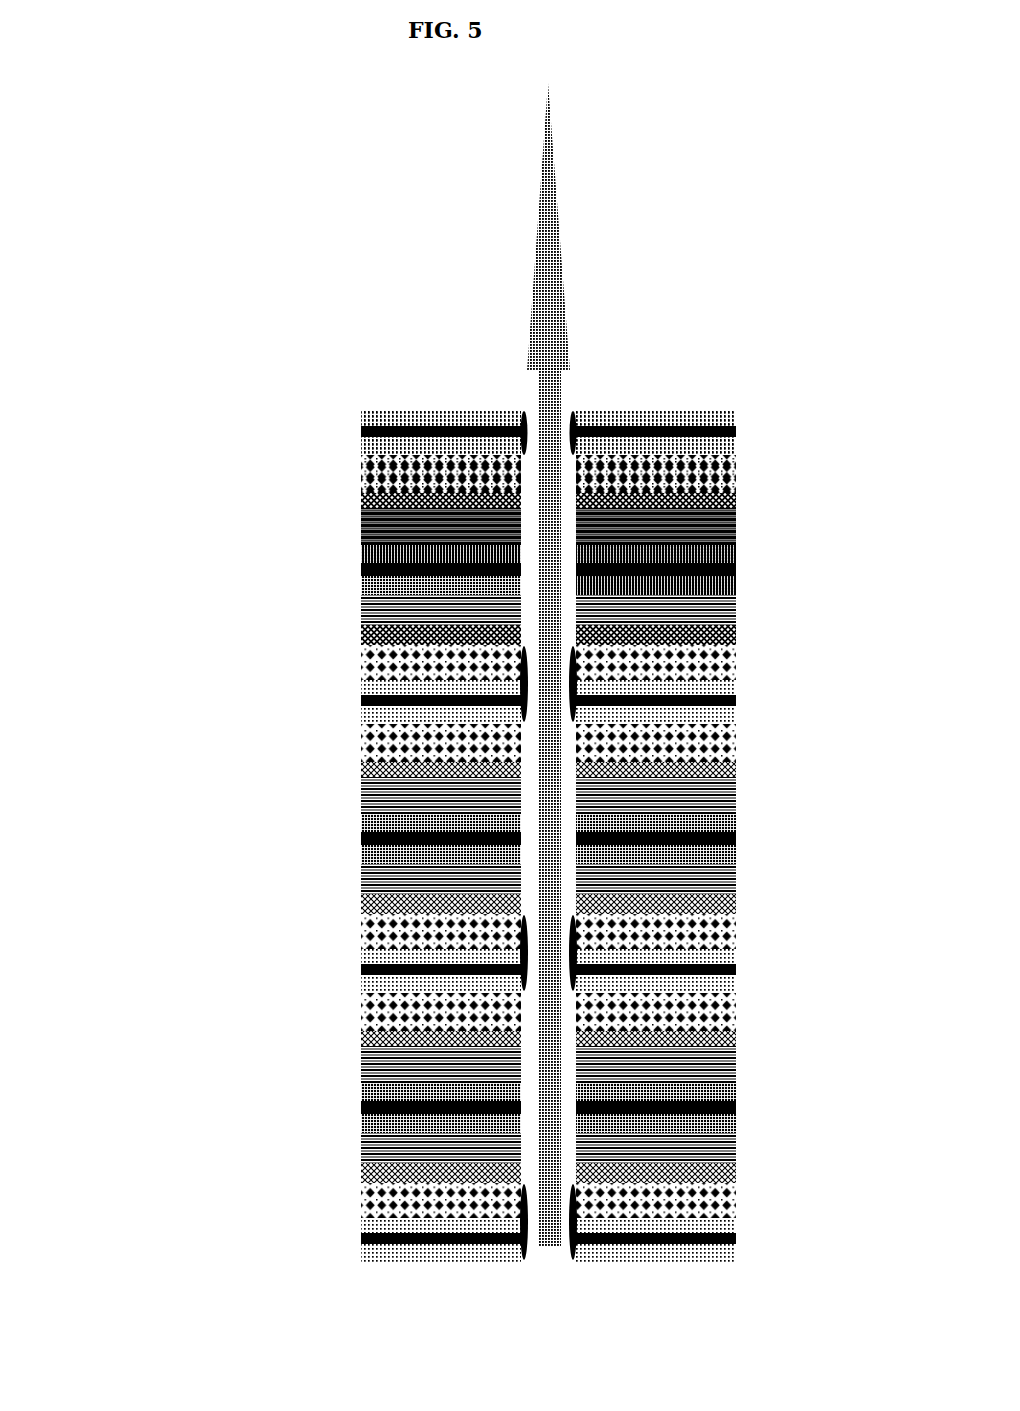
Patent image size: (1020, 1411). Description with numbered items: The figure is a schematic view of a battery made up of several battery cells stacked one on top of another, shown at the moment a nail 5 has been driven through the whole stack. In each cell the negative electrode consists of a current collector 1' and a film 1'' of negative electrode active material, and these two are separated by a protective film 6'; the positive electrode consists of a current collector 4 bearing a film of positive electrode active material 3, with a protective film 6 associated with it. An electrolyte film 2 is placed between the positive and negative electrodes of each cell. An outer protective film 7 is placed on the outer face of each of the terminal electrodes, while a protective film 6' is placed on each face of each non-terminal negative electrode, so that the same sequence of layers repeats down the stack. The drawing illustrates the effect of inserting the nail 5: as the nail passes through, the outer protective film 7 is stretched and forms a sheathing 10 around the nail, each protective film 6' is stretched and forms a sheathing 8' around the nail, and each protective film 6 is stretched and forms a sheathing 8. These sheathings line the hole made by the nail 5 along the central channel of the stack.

The nail 5 is at (517, 252).
The outer protective film 7 is at (395, 405).
The current collector of positive electrode 4 is at (352, 417).
The protective film for a positive electrode 6 is at (416, 456).
The film of positive electrode active material 3 is at (352, 462).
The electrolyte film 2 is at (338, 495).
The film of negative electrode active material 1'' is at (412, 579).
The protective film for a negative electrode 6' is at (433, 626).
The current collector of a negative electrode 1' is at (401, 658).
The sheathing produced by stretching of a film 6 8 is at (623, 380).
The sheathing produced by stretching of a film 6' 8' is at (698, 609).
The sheathing formed by stretching of a film 7 10 is at (519, 1222).